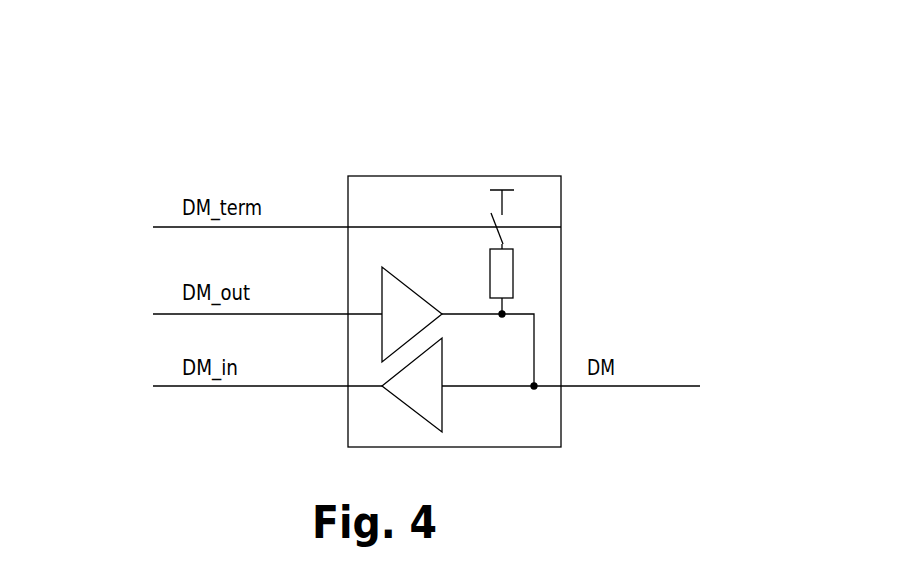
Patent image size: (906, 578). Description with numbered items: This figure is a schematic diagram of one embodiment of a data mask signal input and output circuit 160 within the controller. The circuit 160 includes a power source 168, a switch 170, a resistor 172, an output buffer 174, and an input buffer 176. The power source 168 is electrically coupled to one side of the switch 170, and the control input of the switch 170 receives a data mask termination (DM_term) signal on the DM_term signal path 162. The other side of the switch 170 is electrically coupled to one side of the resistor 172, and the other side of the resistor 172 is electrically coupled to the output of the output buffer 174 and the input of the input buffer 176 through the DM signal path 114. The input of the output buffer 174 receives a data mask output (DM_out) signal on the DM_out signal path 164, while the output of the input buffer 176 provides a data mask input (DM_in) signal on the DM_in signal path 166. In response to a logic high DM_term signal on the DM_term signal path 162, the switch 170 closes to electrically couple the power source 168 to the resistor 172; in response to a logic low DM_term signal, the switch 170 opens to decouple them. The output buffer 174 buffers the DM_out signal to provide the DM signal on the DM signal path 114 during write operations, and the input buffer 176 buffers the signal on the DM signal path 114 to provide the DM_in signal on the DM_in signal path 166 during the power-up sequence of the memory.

The data mask signal input and output circuit 160 is at (468, 130).
The DM_term signal path 162 is at (175, 228).
The DM_out signal path 164 is at (175, 315).
The DM_in signal path 166 is at (175, 387).
The power source 168 is at (514, 190).
The switch 170 is at (500, 226).
The resistor 172 is at (513, 270).
The output buffer 174 is at (418, 296).
The input buffer 176 is at (414, 414).
The DM signal path 114 is at (638, 386).